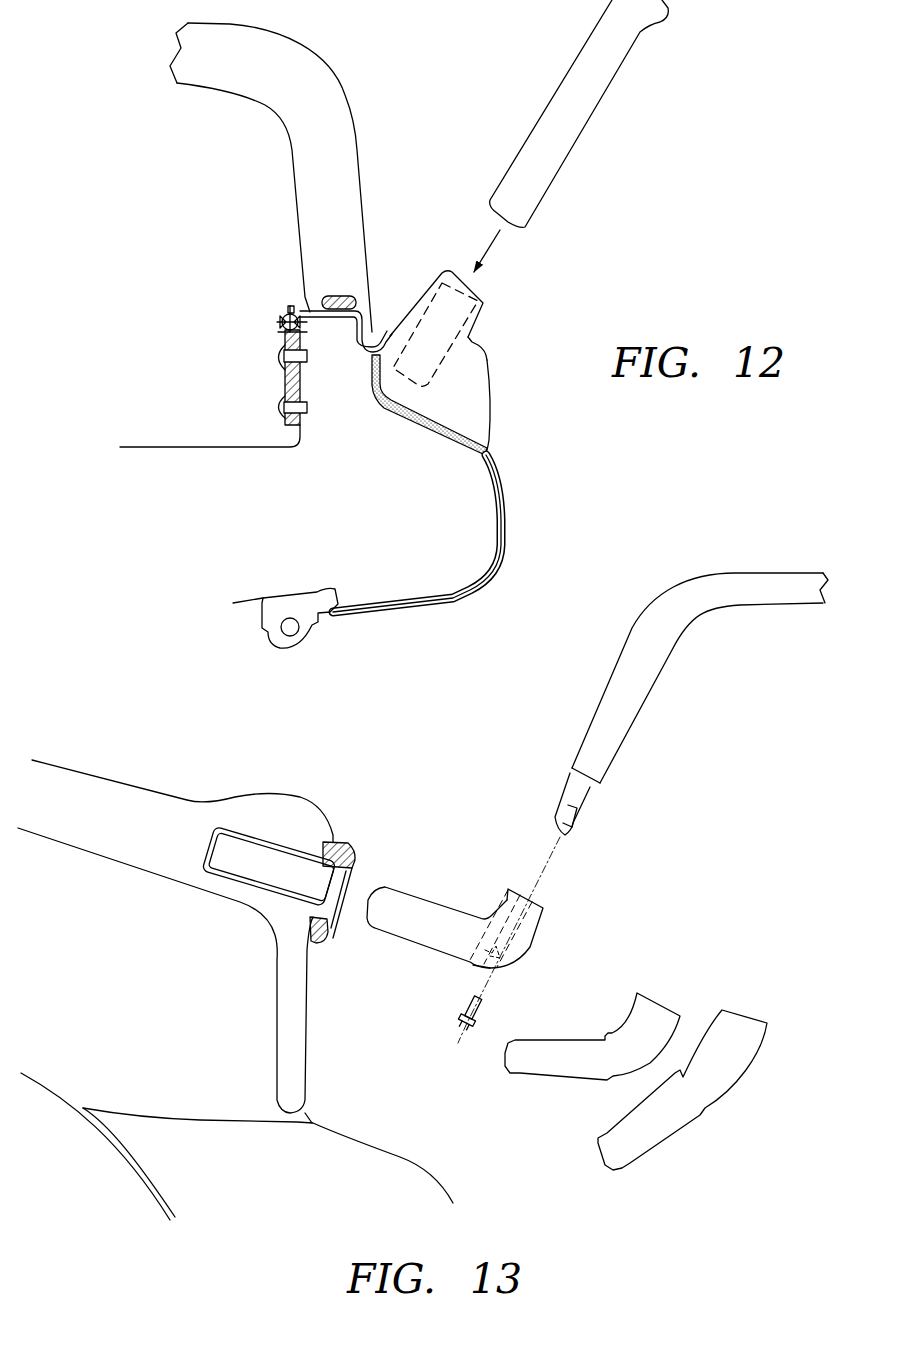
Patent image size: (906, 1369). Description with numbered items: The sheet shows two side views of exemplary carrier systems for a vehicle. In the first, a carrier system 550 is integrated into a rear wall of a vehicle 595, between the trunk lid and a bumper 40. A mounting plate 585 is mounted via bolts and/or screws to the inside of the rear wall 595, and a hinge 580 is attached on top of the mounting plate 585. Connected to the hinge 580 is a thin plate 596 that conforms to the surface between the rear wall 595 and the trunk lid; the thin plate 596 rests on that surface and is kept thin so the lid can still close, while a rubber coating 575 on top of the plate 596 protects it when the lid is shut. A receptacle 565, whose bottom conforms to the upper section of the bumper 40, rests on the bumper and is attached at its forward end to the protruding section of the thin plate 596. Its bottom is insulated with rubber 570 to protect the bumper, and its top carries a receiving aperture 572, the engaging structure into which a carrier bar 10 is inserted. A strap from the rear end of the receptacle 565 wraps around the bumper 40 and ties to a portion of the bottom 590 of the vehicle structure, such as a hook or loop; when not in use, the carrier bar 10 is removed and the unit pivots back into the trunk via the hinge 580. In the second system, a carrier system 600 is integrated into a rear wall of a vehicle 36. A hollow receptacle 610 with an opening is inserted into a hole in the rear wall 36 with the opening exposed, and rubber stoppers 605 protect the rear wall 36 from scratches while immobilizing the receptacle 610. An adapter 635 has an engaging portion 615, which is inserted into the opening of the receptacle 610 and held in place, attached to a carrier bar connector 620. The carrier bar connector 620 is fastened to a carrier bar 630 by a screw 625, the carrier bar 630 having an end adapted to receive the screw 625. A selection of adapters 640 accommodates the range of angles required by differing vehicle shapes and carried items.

In FIG. 12, the carrier bar 10 is at (522, 153).
In FIG. 12, the rear wall of a vehicle 36 is at (317, 82).
In FIG. 13, the rear wall of a vehicle 36 is at (293, 797).
In FIG. 12, the bumper 40 is at (470, 572).
In FIG. 12, the carrier system 550 is at (658, 148).
In FIG. 12, the receptacle 565 is at (492, 358).
In FIG. 12, the rubber 570 is at (488, 455).
In FIG. 12, the receiving aperture 572 is at (467, 300).
In FIG. 12, the rubber coating 575 is at (337, 295).
In FIG. 12, the hinge 580 is at (288, 318).
In FIG. 12, the mounting plate 585 is at (290, 378).
In FIG. 12, the bottom of the structure of the vehicle 590 is at (317, 620).
In FIG. 12, the rear wall of a vehicle 595 is at (353, 391).
In FIG. 12, the thin plate 596 is at (380, 348).
In FIG. 13, the carrier system 600 is at (173, 748).
In FIG. 13, the rubber stoppers 605 is at (345, 843).
In FIG. 13, the hollow receptacle 610 is at (356, 858).
In FIG. 13, the engaging portion 615 is at (413, 910).
In FIG. 13, the carrier bar connector 620 is at (503, 903).
In FIG. 13, the screw 625 is at (458, 1023).
In FIG. 13, the carrier bar 630 is at (582, 748).
In FIG. 13, the adapter 635 is at (443, 960).
In FIG. 13, the adapters 640 is at (617, 1142).